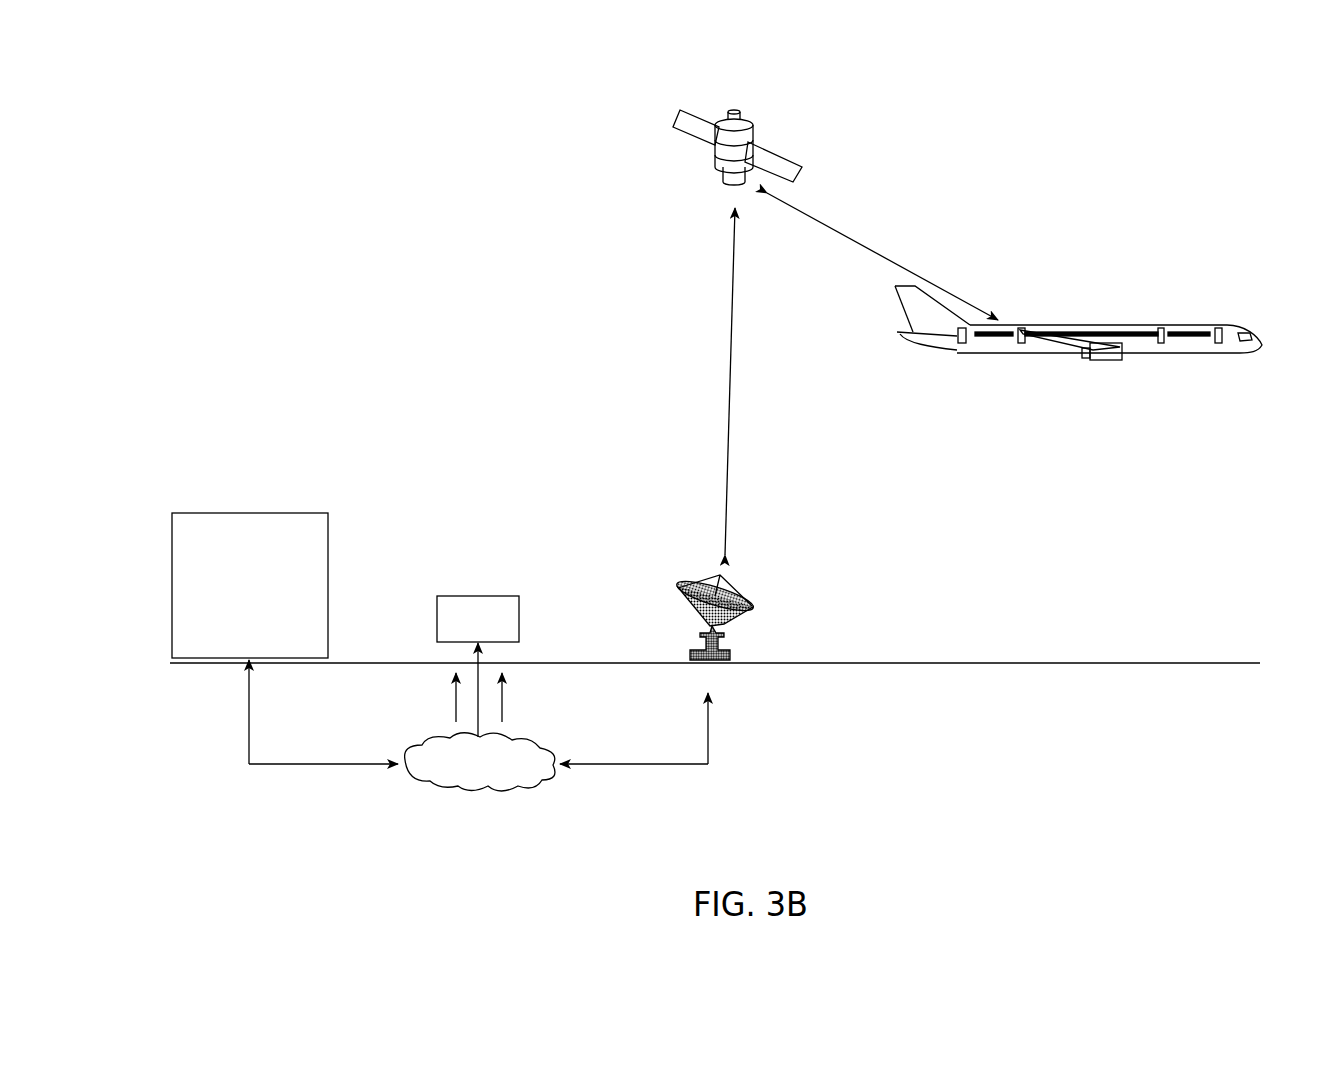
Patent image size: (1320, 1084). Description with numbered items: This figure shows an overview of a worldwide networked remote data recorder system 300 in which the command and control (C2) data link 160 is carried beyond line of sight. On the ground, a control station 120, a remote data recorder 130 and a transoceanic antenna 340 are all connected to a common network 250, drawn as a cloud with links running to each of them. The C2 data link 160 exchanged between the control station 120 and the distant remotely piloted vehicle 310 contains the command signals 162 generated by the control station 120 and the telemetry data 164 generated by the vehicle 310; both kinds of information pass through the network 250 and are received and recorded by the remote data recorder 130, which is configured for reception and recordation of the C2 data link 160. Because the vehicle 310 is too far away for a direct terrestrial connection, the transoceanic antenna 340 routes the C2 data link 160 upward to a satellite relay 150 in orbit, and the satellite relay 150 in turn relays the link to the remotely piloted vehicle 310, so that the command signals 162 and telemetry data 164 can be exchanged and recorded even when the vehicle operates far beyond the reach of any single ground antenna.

The system 300 is at (182, 183).
The satellite relay 150 is at (692, 137).
The remotely piloted vehicle 310 is at (1118, 325).
The command and control (C2) data link 160 is at (727, 398).
The control station 120 is at (296, 513).
The remote data recorder 130 is at (498, 596).
The transoceanic antenna 340 is at (683, 592).
The network 250 is at (460, 793).
The command signals 162 is at (457, 692).
The telemetry data 164 is at (500, 692).